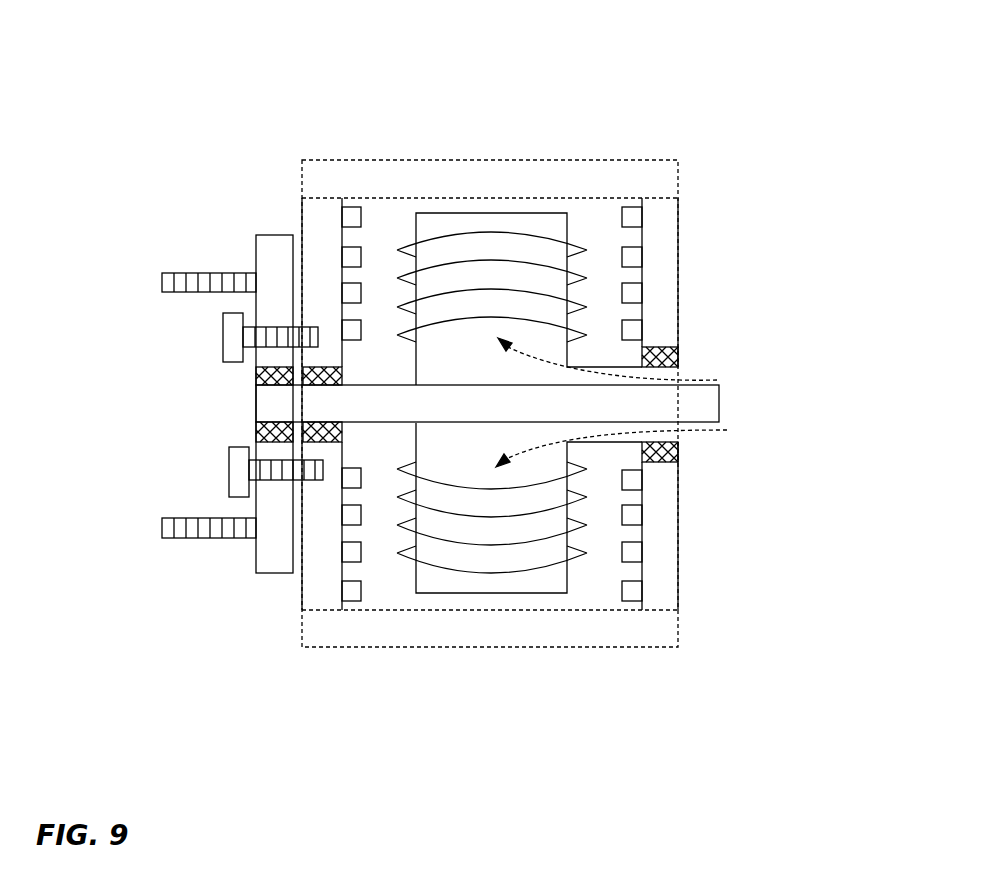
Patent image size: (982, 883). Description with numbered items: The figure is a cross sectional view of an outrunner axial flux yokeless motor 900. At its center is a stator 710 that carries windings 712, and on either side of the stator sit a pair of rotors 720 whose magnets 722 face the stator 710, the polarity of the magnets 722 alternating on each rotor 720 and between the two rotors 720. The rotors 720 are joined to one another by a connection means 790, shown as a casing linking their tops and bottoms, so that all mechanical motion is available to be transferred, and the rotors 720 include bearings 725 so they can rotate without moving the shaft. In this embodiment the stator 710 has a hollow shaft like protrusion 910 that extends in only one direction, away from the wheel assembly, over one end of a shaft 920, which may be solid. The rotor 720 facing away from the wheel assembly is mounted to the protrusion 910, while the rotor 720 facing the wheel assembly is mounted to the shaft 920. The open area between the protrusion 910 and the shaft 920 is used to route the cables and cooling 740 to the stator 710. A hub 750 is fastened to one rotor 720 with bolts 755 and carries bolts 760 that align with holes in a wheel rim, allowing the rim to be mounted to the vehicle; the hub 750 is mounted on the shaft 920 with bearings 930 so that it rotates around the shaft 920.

The outrunner axial flux yokeless motor 900 is at (777, 116).
The connection means 790 is at (492, 160).
The rotor 720 is at (320, 598).
The magnets 722 is at (349, 205).
The bearings 725 is at (678, 363).
The stator 710 is at (553, 578).
The windings 712 is at (408, 557).
The cables and cooling 740 is at (717, 380).
The hollow shaft like protrusion 910 is at (660, 433).
The shaft 920 is at (720, 401).
The bearings 930 is at (257, 430).
The hub 750 is at (256, 253).
The bolts 760 is at (162, 290).
The bolts 755 is at (223, 340).